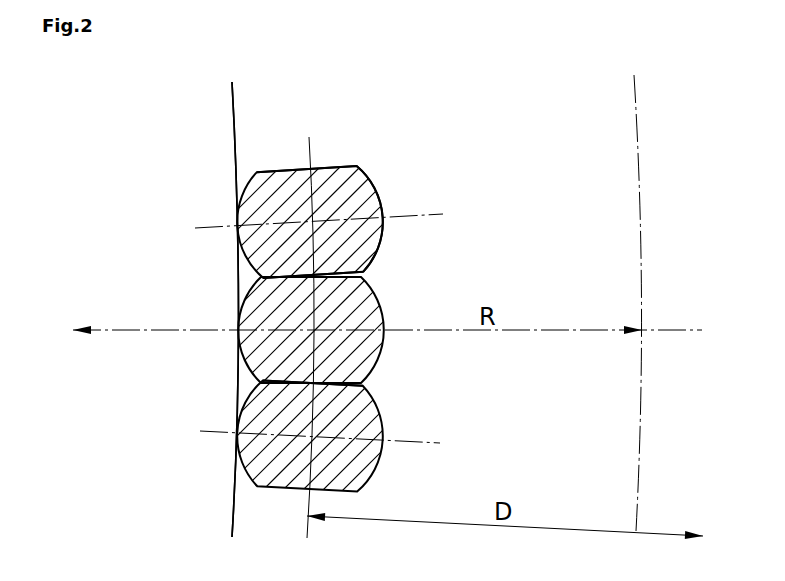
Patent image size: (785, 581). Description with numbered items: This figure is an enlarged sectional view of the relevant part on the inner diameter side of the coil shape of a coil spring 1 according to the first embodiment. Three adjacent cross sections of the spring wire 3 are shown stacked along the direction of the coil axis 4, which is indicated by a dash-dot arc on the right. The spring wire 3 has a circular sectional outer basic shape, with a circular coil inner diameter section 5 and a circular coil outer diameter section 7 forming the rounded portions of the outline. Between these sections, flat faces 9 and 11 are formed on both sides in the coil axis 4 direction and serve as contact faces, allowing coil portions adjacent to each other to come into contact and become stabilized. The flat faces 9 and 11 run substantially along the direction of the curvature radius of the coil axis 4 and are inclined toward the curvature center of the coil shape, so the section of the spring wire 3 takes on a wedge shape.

The coil spring 1 is at (176, 133).
The spring wire 3 is at (355, 187).
The coil axis 4 is at (638, 160).
The coil inner diameter section 5 is at (382, 204).
The coil outer diameter section 7 is at (248, 186).
The flat face 9 is at (325, 170).
The flat face 11 is at (336, 280).